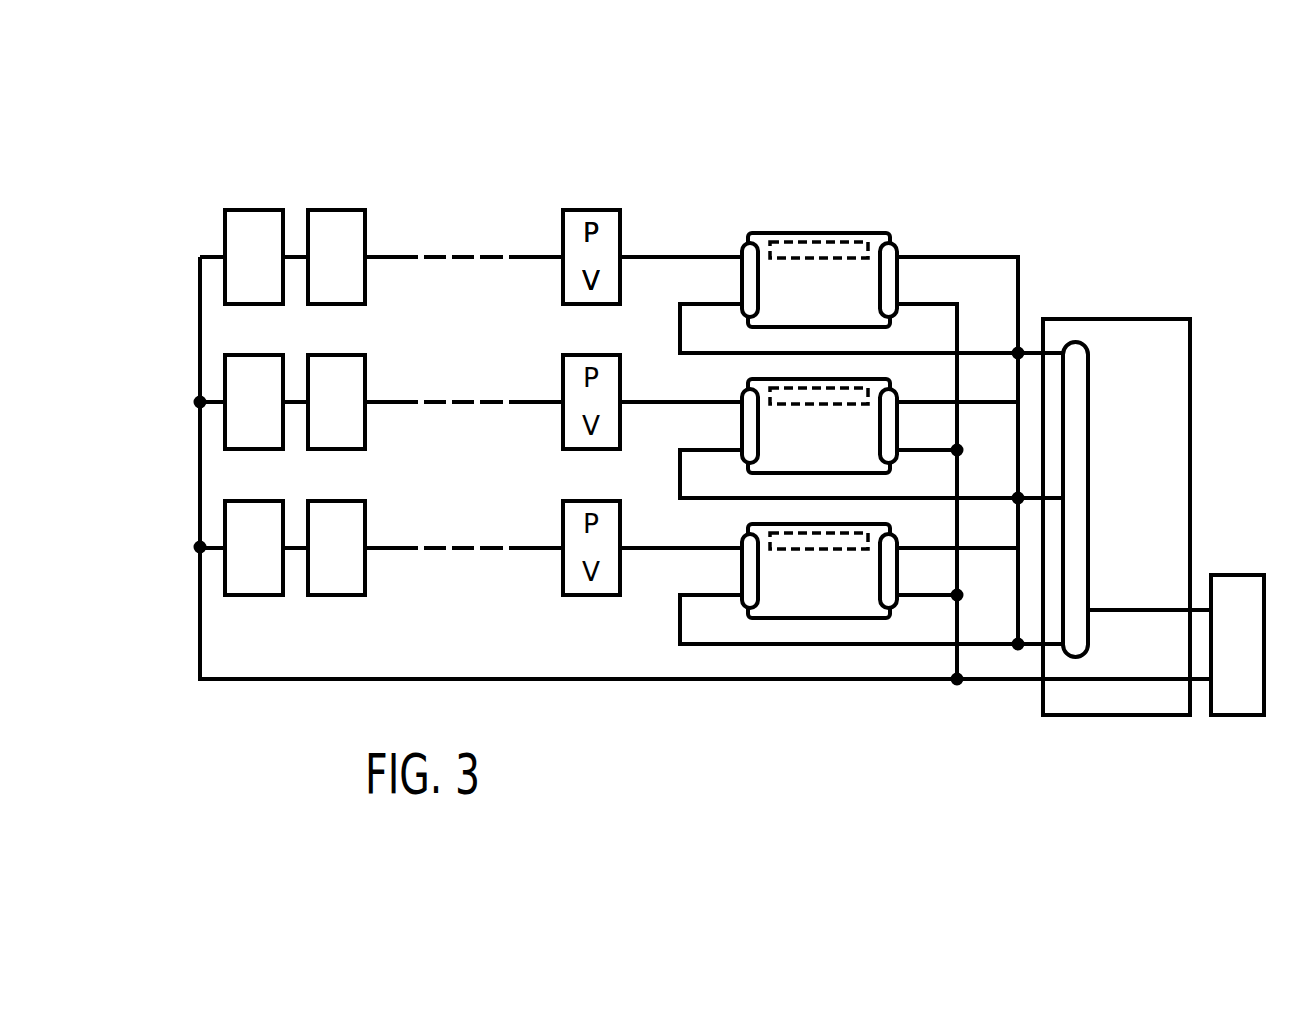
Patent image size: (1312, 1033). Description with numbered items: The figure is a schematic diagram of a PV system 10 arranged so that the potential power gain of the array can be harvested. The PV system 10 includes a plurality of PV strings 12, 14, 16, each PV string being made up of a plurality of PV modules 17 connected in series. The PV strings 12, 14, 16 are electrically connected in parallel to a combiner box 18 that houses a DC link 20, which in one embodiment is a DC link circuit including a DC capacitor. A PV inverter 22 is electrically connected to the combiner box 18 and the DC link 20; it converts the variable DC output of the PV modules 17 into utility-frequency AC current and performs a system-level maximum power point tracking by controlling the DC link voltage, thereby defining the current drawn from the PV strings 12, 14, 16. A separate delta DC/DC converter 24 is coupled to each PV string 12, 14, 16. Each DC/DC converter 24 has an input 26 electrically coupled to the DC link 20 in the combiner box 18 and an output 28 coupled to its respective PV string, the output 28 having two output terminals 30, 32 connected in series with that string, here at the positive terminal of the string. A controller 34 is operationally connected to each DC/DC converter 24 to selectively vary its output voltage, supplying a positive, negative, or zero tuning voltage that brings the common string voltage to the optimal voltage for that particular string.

The PV system 10 is at (1125, 145).
The PV string 12 is at (453, 223).
The PV string 14 is at (453, 370).
The PV string 16 is at (453, 515).
The PV modules 17 is at (335, 210).
The combiner box 18 is at (1190, 373).
The DC link 20 is at (1090, 363).
The PV inverter 22 is at (1233, 575).
The delta DC/DC converter 24 is at (853, 234).
The input 26 is at (907, 278).
The output 28 is at (685, 220).
The output terminal 30 is at (680, 257).
The output terminal 32 is at (680, 316).
The controller 34 is at (781, 243).